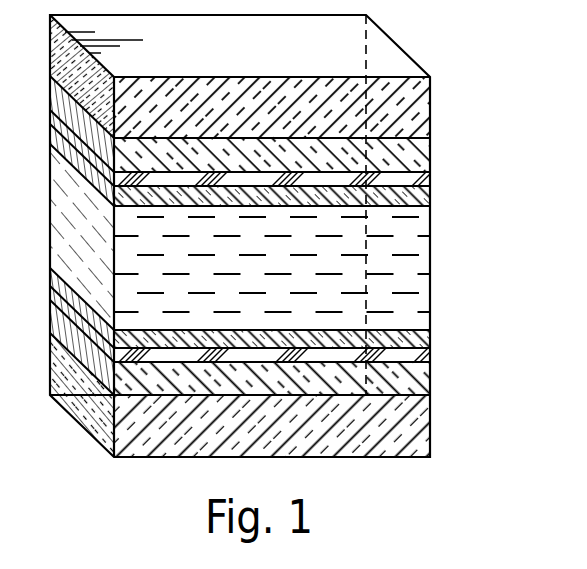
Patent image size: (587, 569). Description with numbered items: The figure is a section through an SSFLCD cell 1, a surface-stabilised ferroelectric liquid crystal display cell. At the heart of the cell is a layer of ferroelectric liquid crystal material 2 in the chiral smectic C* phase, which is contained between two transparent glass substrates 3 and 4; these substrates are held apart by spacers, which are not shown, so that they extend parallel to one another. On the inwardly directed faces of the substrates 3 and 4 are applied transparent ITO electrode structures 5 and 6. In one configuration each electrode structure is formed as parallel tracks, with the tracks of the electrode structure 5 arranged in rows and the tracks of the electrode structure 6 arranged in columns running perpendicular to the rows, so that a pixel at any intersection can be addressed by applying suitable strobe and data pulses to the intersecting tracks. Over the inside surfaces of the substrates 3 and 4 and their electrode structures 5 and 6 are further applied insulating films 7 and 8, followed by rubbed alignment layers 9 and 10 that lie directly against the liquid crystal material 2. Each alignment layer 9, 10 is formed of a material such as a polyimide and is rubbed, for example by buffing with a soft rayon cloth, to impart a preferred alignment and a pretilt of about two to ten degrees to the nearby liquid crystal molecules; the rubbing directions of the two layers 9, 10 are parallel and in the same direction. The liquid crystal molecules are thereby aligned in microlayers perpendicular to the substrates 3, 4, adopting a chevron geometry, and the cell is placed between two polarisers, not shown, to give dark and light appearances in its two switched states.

The SSFLCD cell 1 is at (474, 68).
The ferroelectric liquid crystal material 2 is at (410, 266).
The transparent glass substrate 3 is at (420, 104).
The transparent glass substrate 4 is at (405, 432).
The transparent ITO electrode structure 5 is at (420, 151).
The transparent ITO electrode structure 6 is at (410, 386).
The insulating film 7 is at (416, 181).
The insulating film 8 is at (418, 357).
The rubbed alignment layer 9 is at (414, 197).
The rubbed alignment layer 10 is at (420, 339).